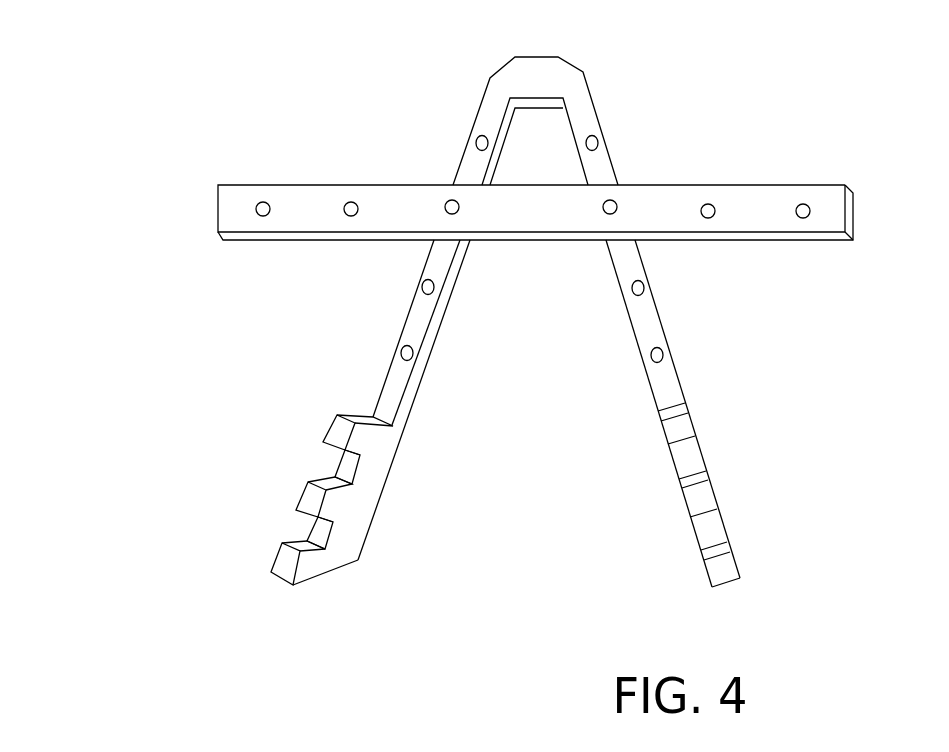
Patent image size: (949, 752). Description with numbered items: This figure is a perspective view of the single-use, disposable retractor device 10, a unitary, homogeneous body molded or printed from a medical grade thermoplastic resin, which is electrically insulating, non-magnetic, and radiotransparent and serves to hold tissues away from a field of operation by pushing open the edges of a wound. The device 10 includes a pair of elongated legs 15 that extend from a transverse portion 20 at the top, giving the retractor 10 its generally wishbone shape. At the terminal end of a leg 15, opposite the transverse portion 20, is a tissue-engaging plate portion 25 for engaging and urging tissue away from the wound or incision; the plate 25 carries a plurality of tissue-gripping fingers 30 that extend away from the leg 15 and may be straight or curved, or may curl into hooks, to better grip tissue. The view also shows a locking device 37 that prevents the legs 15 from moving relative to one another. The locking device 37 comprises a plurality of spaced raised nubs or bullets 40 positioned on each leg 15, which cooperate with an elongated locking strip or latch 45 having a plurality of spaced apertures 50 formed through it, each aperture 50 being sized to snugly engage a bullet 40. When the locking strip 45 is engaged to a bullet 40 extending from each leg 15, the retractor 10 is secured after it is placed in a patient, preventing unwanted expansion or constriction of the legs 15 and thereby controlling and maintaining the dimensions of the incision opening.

The device 10 is at (513, 602).
The elongated legs 15 is at (648, 325).
The transverse portion 20 is at (547, 72).
The tissue-engaging plate portion 25 is at (362, 497).
The tissue-gripping fingers 30 is at (337, 433).
The locking device 37 is at (198, 212).
The bullets 40 is at (642, 285).
The locking strip 45 is at (752, 183).
The apertures 50 is at (807, 208).